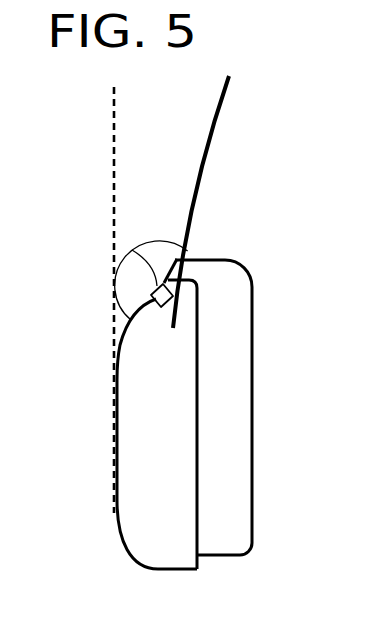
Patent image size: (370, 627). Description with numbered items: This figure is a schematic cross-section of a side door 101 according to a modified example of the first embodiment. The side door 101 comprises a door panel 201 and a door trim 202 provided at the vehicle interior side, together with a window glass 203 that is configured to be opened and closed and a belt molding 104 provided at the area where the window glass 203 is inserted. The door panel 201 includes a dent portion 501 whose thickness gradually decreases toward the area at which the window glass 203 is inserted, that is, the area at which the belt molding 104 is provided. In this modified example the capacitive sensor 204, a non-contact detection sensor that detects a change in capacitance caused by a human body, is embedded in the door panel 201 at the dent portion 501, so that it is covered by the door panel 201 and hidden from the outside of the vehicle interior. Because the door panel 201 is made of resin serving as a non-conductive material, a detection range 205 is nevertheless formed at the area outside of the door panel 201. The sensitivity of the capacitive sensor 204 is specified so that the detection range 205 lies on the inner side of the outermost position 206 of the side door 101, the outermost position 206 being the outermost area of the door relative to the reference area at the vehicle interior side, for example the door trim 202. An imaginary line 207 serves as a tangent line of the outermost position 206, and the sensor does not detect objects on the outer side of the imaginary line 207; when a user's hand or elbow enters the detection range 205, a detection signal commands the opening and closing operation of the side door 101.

The side door 101 is at (172, 371).
The belt molding 104 is at (170, 257).
The door panel 201 is at (167, 570).
The door trim 202 is at (251, 427).
The window glass 203 is at (208, 152).
The capacitive sensor 204 is at (117, 262).
The detection range 205 is at (132, 250).
The outermost position 206 is at (113, 430).
The imaginary line 207 is at (118, 117).
The dent portion 501 is at (152, 295).